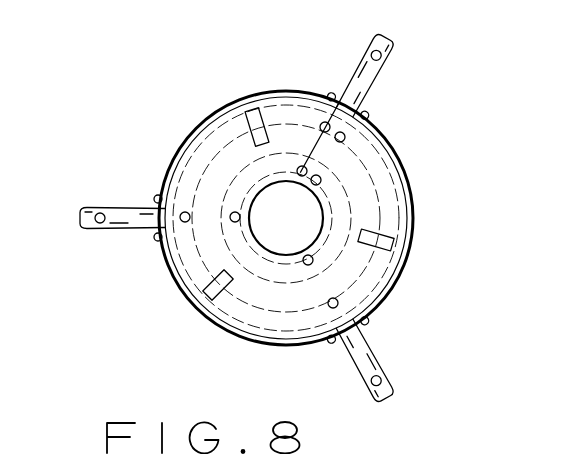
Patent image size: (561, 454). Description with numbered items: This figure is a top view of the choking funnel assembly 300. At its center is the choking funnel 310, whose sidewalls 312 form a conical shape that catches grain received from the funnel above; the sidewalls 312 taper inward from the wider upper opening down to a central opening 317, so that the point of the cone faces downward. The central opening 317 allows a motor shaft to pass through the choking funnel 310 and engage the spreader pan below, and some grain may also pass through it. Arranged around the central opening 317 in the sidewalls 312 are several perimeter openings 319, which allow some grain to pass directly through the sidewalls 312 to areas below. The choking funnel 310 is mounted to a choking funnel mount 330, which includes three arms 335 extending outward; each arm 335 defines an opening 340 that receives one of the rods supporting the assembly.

The choking funnel assembly 300 is at (426, 201).
The choking funnel 310 is at (199, 120).
The sidewalls 312 is at (254, 322).
The central opening 317 is at (315, 217).
The perimeter openings 319 is at (262, 113).
The choking funnel mount 330 is at (399, 152).
The arms 335 is at (364, 78).
The openings 340 is at (383, 54).